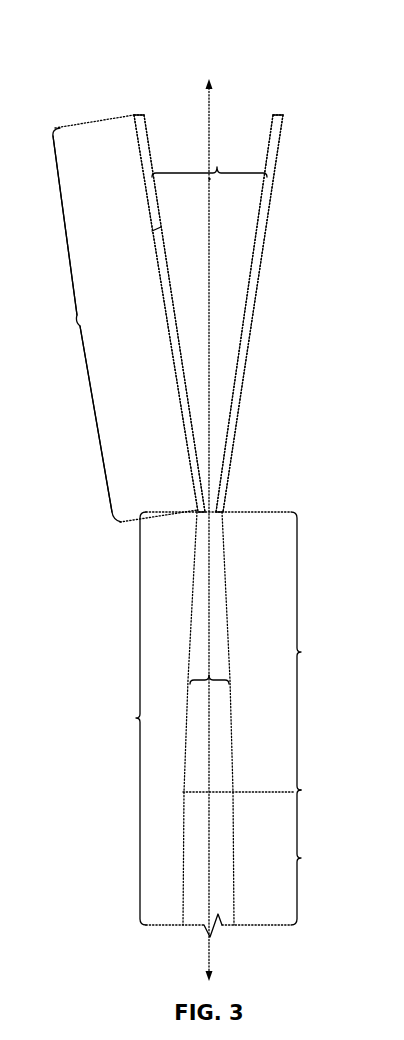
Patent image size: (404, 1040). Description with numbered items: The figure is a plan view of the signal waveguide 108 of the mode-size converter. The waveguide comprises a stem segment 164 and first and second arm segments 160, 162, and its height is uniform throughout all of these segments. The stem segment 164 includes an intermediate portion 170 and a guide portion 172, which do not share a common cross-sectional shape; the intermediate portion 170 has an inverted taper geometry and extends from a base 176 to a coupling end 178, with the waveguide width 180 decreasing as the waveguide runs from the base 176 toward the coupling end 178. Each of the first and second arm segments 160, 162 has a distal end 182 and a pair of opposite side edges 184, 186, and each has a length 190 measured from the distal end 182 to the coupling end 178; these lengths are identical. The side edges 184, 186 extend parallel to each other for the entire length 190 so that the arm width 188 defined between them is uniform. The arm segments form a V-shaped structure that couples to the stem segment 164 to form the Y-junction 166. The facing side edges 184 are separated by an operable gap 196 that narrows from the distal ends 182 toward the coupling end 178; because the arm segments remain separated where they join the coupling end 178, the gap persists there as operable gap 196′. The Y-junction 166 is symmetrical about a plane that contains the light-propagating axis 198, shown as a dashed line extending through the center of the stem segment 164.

The signal waveguide 108 is at (97, 45).
The first arm segment 160 is at (151, 120).
The second arm segment 162 is at (266, 120).
The distal end 182 is at (134, 106).
The operable gap 196 is at (217, 167).
The light-propagating axis 198 is at (210, 179).
The arm width 188 is at (150, 228).
The side edge 184 is at (177, 312).
The side edge 186 is at (168, 353).
The length 190 is at (76, 324).
The Y-junction 166 is at (279, 419).
The operable gap at coupling end 196′ is at (209, 499).
The coupling end 178 is at (217, 515).
The stem segment 164 is at (135, 718).
The intermediate portion 170 is at (302, 652).
The guide portion 172 is at (302, 858).
The base 176 is at (195, 773).
The waveguide width 180 is at (208, 673).